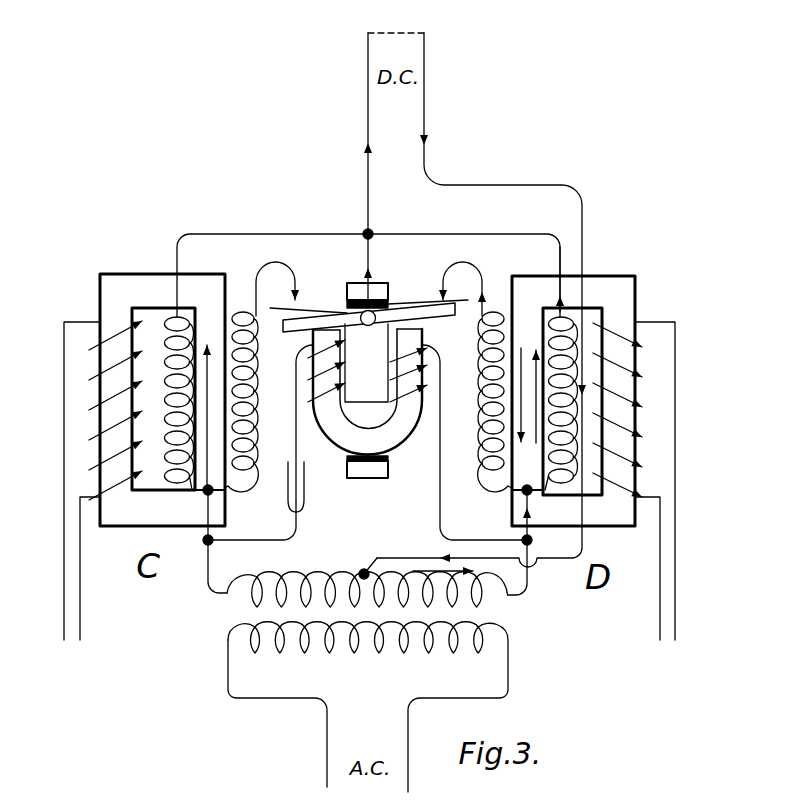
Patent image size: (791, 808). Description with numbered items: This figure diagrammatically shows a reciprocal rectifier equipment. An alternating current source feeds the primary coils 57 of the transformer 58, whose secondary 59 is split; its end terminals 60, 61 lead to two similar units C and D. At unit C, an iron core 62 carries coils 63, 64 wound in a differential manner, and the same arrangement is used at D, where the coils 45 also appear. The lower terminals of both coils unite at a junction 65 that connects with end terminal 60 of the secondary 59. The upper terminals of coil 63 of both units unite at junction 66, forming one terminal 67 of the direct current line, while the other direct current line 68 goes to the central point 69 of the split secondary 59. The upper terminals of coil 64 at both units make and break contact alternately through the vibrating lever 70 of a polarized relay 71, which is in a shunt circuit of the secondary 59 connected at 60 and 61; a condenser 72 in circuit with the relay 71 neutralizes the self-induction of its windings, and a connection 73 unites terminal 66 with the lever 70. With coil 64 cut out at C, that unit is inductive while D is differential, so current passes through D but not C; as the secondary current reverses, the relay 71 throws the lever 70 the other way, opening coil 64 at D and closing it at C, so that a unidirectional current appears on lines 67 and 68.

The coils 45 is at (95, 382).
The primary coils 57 is at (377, 652).
The transformer 58 is at (347, 580).
The secondary 59 is at (329, 575).
The end terminal 60 is at (205, 546).
The end terminal 61 is at (532, 541).
The iron core 62 is at (116, 528).
The coil 63 is at (166, 350).
The coil 64 is at (257, 363).
The junction 65 is at (212, 493).
The junction 66 is at (370, 234).
The direct current line terminal 67 is at (367, 100).
The direct current line 68 is at (426, 103).
The central point 69 is at (372, 560).
The vibrating lever 70 is at (455, 313).
The polarized relay 71 is at (368, 401).
The condenser 72 is at (305, 489).
The connection 73 is at (371, 252).